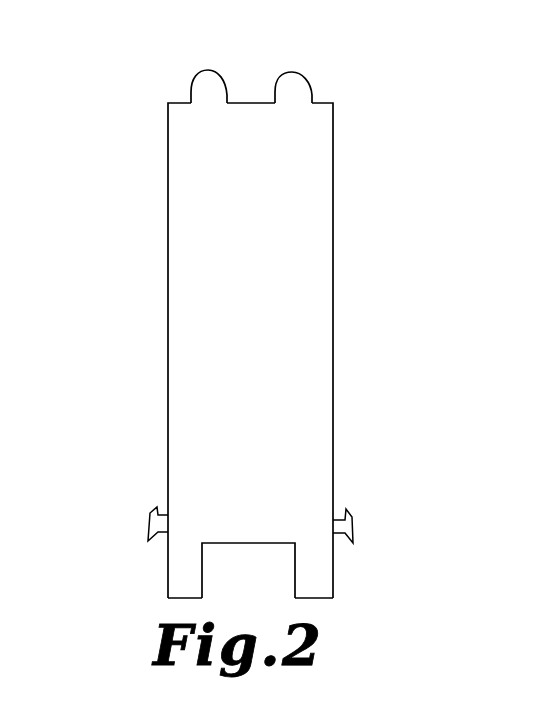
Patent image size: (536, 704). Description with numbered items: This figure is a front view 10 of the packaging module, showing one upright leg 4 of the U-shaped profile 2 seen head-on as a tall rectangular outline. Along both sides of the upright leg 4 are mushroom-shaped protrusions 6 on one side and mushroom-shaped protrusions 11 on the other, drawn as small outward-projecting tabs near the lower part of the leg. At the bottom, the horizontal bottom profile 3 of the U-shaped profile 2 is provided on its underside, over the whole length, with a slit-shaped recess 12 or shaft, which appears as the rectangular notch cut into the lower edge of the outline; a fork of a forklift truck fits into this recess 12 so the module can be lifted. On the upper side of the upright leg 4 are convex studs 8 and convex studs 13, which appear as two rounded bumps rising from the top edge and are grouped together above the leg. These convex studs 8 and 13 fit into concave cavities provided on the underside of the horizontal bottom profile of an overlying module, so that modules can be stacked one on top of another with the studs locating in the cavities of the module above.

The U-shaped profile 2 is at (333, 67).
The horizontal bottom profile 3 is at (172, 577).
The upright leg 4 is at (322, 304).
The mushroom-shaped protrusion 6 is at (353, 512).
The convex stud 8 is at (293, 94).
The front view 10 is at (362, 59).
The mushroom-shaped protrusion 11 is at (143, 512).
The slit-shaped recess 12 is at (253, 577).
The convex stud 13 is at (202, 83).